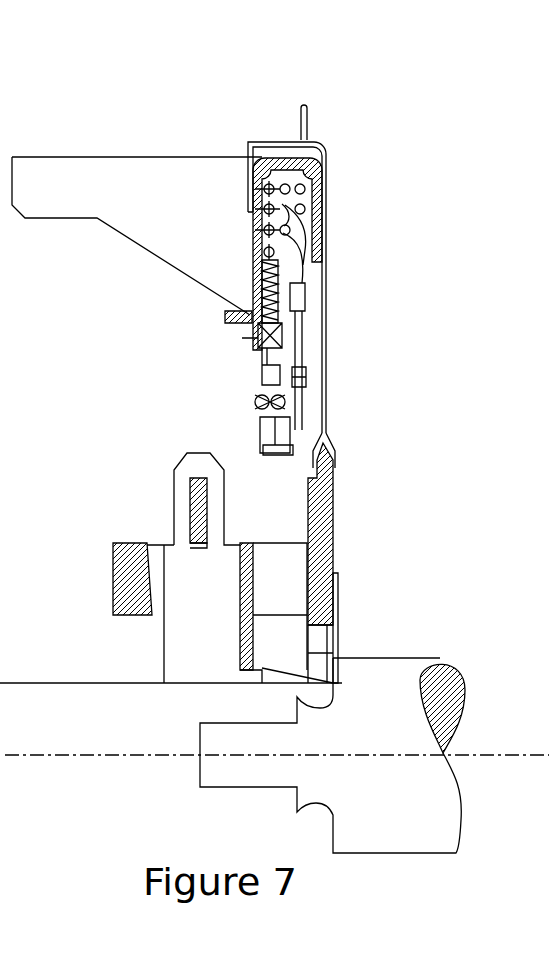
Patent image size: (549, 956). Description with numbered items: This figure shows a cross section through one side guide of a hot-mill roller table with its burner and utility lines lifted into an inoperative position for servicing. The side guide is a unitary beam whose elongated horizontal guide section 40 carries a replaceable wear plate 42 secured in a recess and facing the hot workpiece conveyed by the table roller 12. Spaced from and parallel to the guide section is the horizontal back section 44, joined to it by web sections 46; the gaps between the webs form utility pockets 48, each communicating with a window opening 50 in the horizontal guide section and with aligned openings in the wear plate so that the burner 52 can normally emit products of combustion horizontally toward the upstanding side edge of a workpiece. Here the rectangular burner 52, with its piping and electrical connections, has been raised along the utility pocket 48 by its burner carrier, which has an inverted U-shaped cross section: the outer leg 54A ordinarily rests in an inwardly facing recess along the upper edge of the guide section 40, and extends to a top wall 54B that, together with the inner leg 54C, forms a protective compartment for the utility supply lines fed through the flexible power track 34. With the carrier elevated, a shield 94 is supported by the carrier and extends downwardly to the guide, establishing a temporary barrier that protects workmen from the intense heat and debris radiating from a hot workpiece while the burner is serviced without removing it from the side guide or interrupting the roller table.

The table roller 12 is at (453, 772).
The power track 34 is at (70, 157).
The horizontal guide section 40 is at (335, 515).
The wear plate 42 is at (336, 585).
The horizontal back section 44 is at (240, 627).
The web section 46 is at (292, 541).
The utility pocket 48 is at (273, 573).
The window opening 50 is at (335, 642).
The burner 52 is at (292, 433).
The outer leg 54A is at (315, 204).
The top wall 54B is at (293, 157).
The inner leg 54C is at (252, 272).
The shield 94 is at (327, 325).